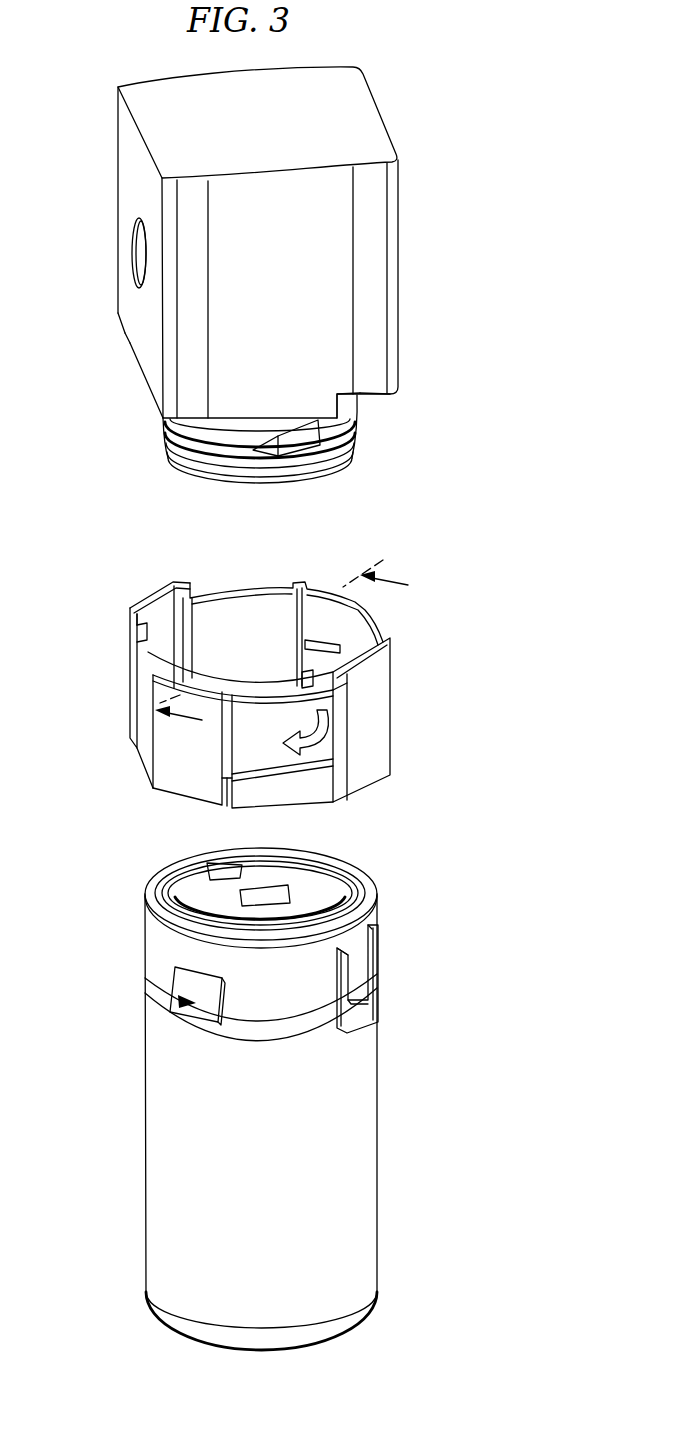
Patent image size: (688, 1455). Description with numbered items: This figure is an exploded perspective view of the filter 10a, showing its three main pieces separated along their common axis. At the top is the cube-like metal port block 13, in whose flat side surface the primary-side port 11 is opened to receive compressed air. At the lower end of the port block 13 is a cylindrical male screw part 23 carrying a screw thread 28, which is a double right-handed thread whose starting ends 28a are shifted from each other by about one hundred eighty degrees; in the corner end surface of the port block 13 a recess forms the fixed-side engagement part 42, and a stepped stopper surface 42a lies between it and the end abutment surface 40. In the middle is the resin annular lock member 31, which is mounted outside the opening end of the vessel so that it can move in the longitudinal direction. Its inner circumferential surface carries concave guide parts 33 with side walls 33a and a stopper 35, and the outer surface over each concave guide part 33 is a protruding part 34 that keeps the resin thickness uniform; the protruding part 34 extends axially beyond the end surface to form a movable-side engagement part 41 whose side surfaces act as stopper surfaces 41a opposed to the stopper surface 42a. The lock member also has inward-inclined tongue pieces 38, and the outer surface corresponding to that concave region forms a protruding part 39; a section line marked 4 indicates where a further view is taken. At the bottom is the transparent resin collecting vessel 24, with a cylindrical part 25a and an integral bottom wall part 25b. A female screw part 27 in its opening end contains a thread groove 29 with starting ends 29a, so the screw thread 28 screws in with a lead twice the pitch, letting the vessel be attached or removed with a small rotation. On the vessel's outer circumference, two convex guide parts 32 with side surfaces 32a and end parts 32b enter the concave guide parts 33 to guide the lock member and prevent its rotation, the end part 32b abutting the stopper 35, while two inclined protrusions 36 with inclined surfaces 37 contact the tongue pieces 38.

The filter 10a is at (272, 293).
The primary-side port 11 is at (138, 252).
The port block 13 is at (372, 231).
The male screw part 23 is at (203, 443).
The collecting vessel 24 is at (294, 1090).
The cylindrical part 25a is at (335, 1183).
The bottom wall part 25b is at (292, 1337).
The female screw part 27 is at (335, 868).
The screw thread 28 is at (352, 447).
The starting end 28a is at (268, 456).
The thread groove 29 is at (192, 892).
The starting end 29a is at (293, 890).
The annular lock member 31 is at (262, 672).
The convex guide part 32 is at (367, 1008).
The side surface 32a is at (380, 965).
The end part 32b is at (380, 920).
The concave guide part 33 is at (170, 640).
The side wall 33a is at (182, 645).
The protruding part 34 is at (130, 675).
The stopper 35 is at (135, 640).
The inclined protrusion 36 is at (175, 1008).
The inclined surface 37 is at (183, 990).
The tongue piece 38 is at (313, 665).
The protruding part 39 is at (167, 752).
The end abutment surface 40 is at (135, 370).
The movable-side engagement part 41 is at (157, 587).
The stopper surface 41a is at (137, 622).
The fixed-side engagement part 42 is at (120, 330).
The stopper surface 42a is at (130, 345).
The section line 4- 4 is at (281, 654).